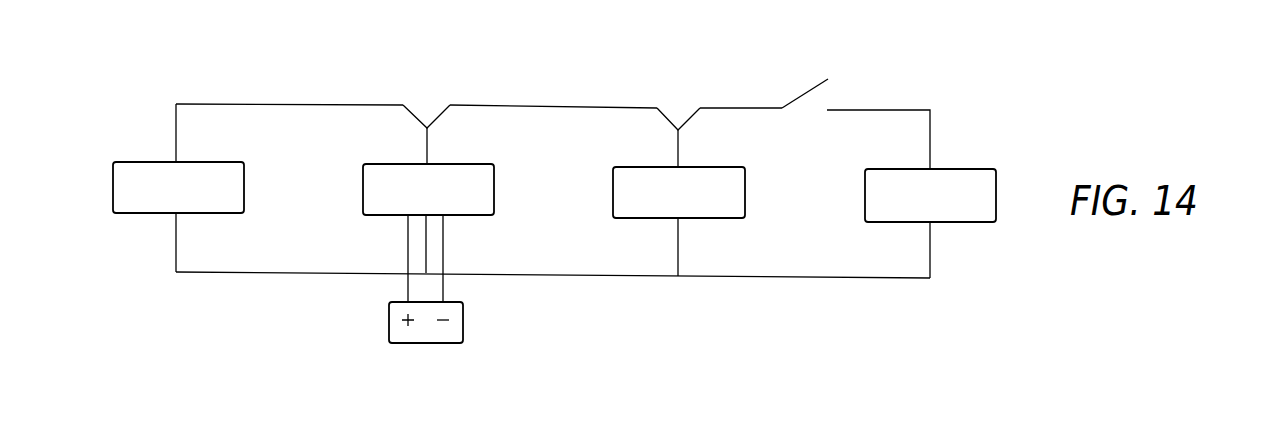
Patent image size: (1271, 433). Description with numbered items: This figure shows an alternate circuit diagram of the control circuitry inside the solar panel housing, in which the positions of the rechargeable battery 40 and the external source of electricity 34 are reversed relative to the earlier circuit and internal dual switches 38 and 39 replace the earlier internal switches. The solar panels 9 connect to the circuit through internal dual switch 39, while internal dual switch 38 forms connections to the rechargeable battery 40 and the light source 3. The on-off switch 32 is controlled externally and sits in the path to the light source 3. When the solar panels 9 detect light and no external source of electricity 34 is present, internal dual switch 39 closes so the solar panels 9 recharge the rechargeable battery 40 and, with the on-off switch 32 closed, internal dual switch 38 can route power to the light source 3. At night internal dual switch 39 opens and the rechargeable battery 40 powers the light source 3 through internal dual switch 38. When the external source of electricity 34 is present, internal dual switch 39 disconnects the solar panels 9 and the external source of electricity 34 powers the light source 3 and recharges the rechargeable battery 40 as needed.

The solar panels 9 is at (133, 160).
The internal dual switch 39 is at (423, 100).
The external source of electricity 34 is at (393, 163).
The internal dual switch 38 is at (673, 103).
The on-off switch 32 is at (808, 80).
The rechargeable battery 40 is at (643, 166).
The light source 3 is at (970, 169).